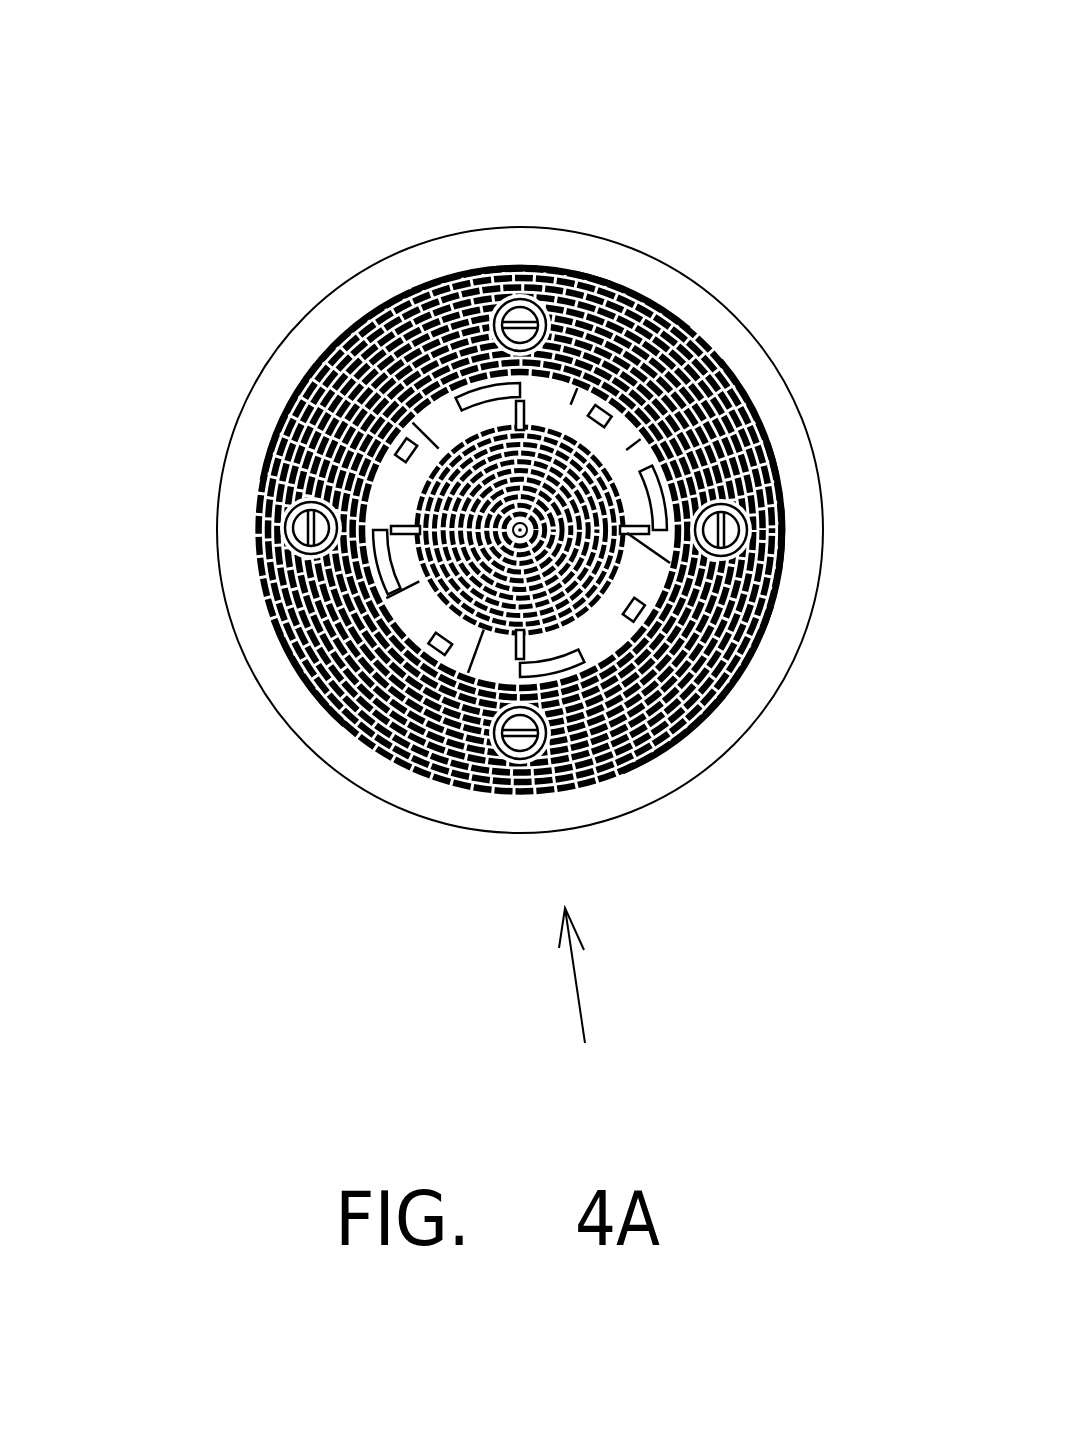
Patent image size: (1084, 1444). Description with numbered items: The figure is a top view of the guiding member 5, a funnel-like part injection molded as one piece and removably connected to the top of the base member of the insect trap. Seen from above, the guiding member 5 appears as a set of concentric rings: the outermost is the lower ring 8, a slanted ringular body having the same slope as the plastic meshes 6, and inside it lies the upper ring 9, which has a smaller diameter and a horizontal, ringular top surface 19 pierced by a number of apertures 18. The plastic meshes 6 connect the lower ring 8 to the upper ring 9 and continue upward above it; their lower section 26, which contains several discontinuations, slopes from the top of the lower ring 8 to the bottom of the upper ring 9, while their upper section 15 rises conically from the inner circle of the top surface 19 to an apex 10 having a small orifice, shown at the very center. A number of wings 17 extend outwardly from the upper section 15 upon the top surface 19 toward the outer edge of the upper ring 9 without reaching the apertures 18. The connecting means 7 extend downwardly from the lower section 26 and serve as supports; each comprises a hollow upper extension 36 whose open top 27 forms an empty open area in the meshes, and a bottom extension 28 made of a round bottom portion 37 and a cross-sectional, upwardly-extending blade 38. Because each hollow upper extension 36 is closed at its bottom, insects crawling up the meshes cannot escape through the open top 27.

The guiding member 5 is at (582, 1013).
The plastic meshes 6 is at (312, 698).
The connecting means 7 is at (745, 533).
The lower ring 8 is at (680, 287).
The upper ring 9 is at (637, 290).
The apex 10 is at (482, 632).
The upper section 15 is at (357, 327).
The wings 17 is at (747, 665).
The apertures 18 is at (272, 415).
The top surface 19 is at (760, 412).
The lower section 26 is at (682, 745).
The open top 27 is at (783, 573).
The bottom extension 28 is at (550, 267).
The hollow upper extension 36 is at (473, 270).
The round bottom portion 37 is at (523, 320).
The cross-sectional upwardly-extending blade 38 is at (783, 505).